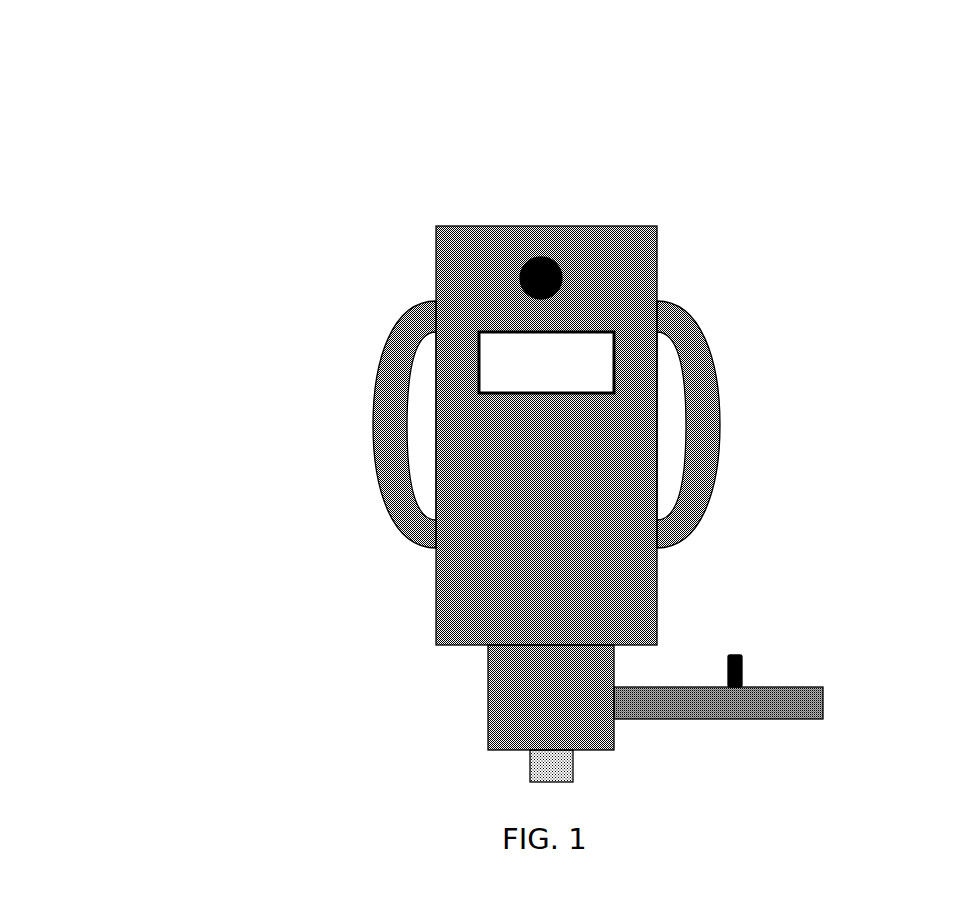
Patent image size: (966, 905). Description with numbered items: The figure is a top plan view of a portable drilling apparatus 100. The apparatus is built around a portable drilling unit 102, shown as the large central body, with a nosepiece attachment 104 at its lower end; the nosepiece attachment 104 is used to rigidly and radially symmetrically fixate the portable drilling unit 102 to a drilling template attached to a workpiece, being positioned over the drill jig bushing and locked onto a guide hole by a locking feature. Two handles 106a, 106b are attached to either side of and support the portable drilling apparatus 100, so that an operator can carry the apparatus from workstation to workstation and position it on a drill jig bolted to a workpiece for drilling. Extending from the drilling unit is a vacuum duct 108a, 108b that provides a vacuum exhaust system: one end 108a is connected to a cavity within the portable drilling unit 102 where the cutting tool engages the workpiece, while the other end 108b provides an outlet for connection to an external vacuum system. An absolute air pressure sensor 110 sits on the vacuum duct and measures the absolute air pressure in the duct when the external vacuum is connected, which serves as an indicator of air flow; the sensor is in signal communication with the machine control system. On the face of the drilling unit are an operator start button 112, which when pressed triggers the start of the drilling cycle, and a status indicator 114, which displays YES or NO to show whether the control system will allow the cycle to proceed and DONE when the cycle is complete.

The portable drilling apparatus 100 is at (594, 142).
The portable drilling unit 102 is at (425, 278).
The nosepiece attachment 104 is at (528, 760).
The handle 106a is at (373, 414).
The handle 106b is at (720, 435).
The vacuum duct end 108a is at (633, 687).
The vacuum duct end 108b is at (813, 686).
The absolute air pressure sensor 110 is at (740, 655).
The operator start button 112 is at (563, 279).
The status indicator 114 is at (617, 363).